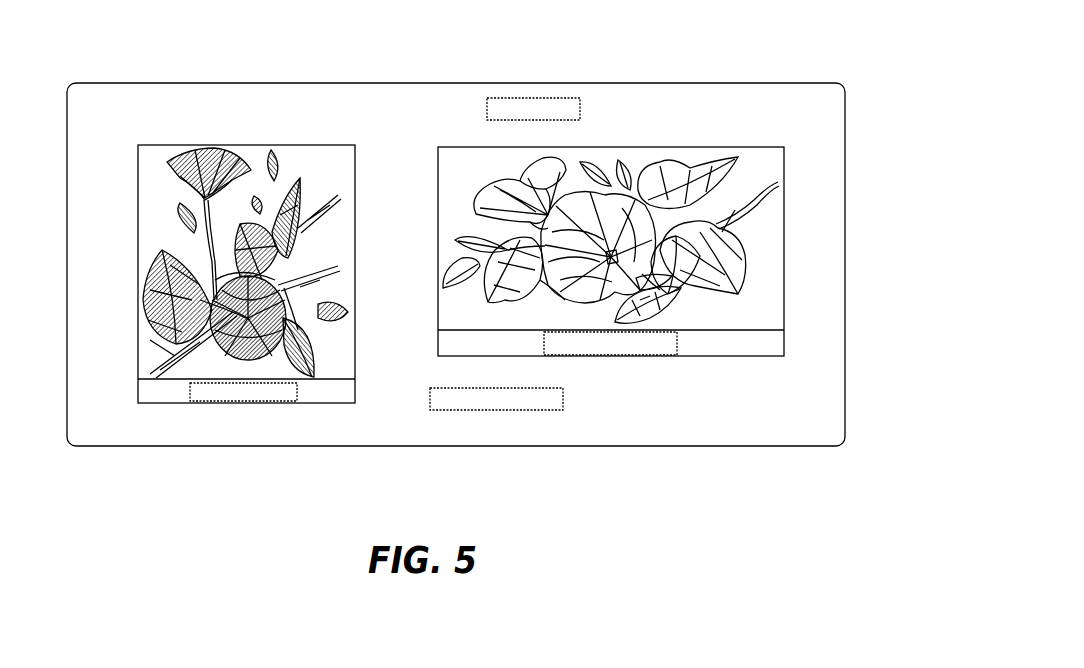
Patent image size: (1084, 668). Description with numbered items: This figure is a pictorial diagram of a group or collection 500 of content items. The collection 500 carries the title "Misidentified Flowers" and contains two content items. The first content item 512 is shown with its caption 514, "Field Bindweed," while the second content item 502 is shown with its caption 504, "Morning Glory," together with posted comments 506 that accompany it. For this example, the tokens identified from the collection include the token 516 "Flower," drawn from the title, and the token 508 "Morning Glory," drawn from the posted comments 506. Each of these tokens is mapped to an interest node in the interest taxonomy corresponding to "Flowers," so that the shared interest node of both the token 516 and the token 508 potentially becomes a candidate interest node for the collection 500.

The collection 500 is at (838, 132).
The content item 502 is at (788, 217).
The caption 504 is at (680, 343).
The posted comments 506 is at (808, 385).
The token 508 is at (490, 410).
The content item 512 is at (155, 403).
The caption 514 is at (202, 403).
The token 516 is at (580, 98).